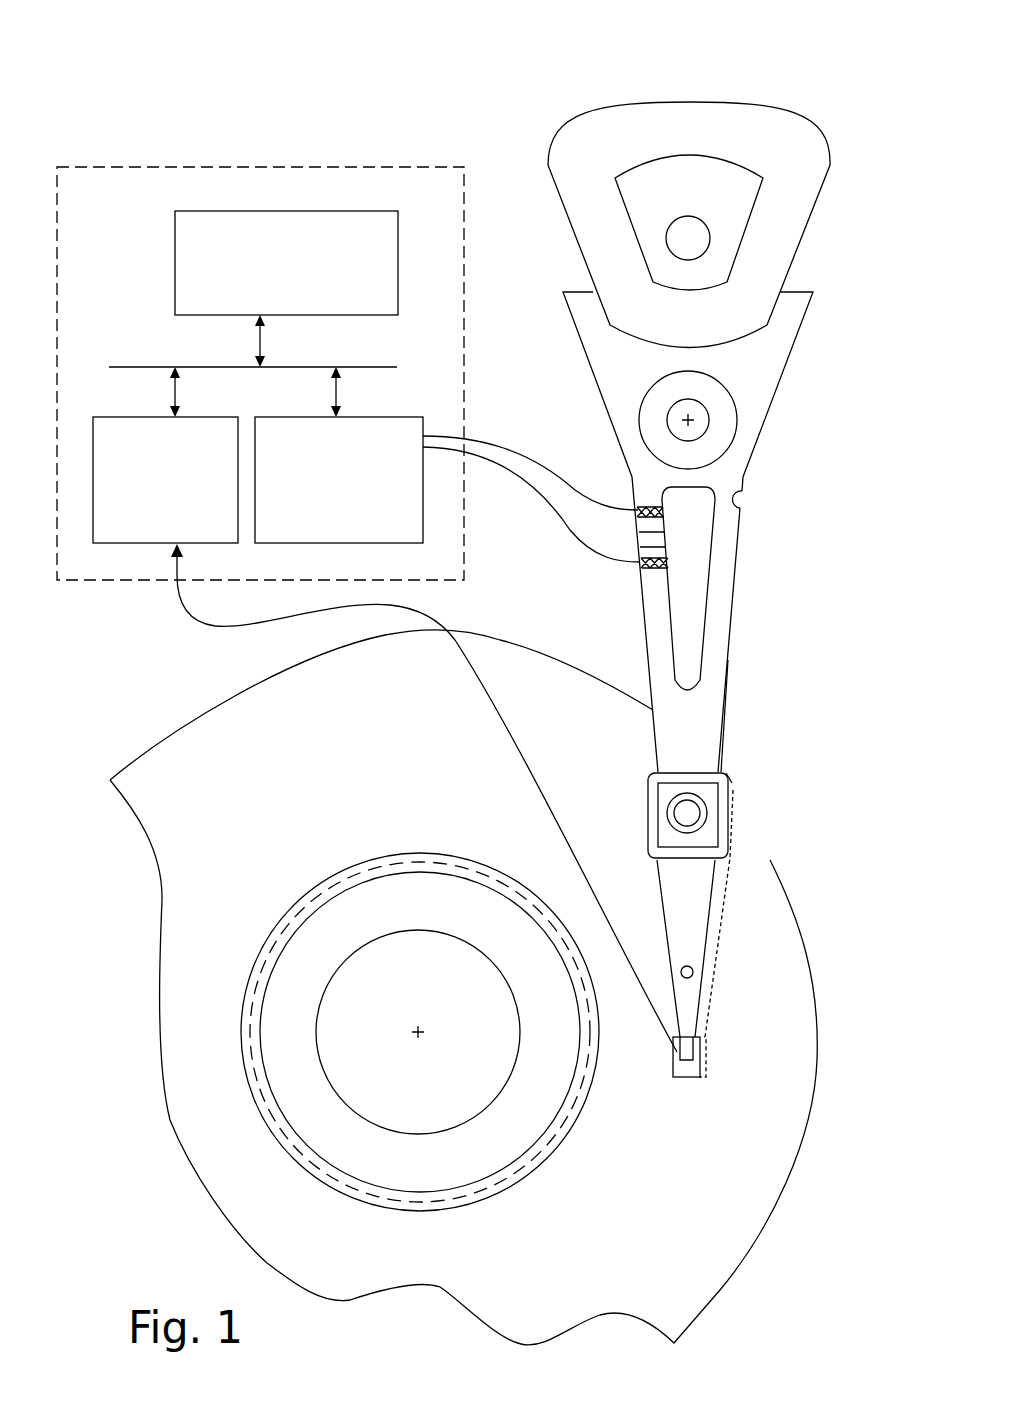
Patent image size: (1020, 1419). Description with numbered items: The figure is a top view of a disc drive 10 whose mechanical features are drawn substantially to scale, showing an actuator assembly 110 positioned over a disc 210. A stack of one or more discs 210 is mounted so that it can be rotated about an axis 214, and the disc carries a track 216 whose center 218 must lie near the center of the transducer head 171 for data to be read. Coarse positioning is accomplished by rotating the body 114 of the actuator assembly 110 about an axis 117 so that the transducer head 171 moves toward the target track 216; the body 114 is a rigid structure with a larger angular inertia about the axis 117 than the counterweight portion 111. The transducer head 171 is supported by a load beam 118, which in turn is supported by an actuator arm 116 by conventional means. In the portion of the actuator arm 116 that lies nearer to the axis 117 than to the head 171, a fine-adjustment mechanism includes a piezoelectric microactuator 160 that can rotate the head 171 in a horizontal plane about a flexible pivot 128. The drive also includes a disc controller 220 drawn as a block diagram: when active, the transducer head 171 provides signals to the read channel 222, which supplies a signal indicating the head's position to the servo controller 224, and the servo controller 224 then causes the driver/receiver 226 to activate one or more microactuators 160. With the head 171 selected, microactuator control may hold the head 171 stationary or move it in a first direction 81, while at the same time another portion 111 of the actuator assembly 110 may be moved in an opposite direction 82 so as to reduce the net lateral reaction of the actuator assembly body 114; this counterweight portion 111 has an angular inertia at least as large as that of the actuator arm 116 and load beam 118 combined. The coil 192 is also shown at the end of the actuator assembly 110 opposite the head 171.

The disc drive 10 is at (362, 75).
The disc controller 220 is at (204, 167).
The servo controller 224 is at (253, 314).
The read channel 222 is at (385, 734).
The driver/receiver 226 is at (447, 489).
The voice coil 192 is at (583, 142).
The body 114 is at (773, 372).
The axis 117 is at (677, 401).
The flexible pivot 128 is at (750, 498).
The piezoelectric microactuator 160 is at (658, 535).
The actuator arm 116 is at (657, 673).
The actuator assembly 110 is at (753, 683).
The load beam 118 is at (677, 887).
The first direction 81 is at (680, 938).
The opposite direction 82 is at (717, 923).
The counterweight portion 111 is at (707, 1010).
The transducer head 171 is at (689, 1078).
The disc 210 is at (165, 746).
The axis 214 is at (438, 1030).
The track 216 is at (270, 940).
The center of the track 218 is at (307, 906).